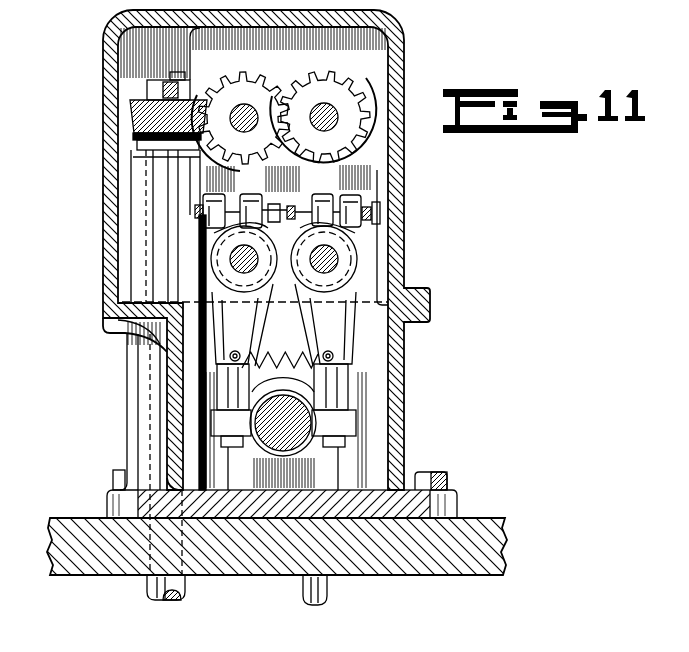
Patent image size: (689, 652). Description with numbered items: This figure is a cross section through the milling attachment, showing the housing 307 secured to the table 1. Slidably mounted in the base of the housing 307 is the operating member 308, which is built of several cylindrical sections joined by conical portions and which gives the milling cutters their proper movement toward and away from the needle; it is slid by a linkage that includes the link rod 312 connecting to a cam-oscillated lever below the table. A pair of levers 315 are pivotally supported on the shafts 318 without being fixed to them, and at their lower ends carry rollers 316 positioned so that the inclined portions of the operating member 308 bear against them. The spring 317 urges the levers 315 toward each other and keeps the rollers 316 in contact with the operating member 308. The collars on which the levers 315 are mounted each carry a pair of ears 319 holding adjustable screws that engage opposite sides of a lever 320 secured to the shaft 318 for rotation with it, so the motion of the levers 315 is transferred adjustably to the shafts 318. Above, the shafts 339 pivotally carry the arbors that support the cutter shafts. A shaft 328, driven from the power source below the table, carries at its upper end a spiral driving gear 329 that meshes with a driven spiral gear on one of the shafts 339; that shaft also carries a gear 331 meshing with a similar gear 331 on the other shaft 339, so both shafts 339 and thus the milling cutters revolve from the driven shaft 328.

The table 1 is at (448, 577).
The housing 307 is at (108, 244).
The operating member 308 is at (268, 436).
The link rod 312 is at (330, 594).
The levers 315 is at (228, 330).
The rollers 316 is at (214, 427).
The spring 317 is at (284, 353).
The shafts 318 is at (232, 259).
The ears 319 is at (212, 194).
The lever 320 is at (205, 221).
The shaft 328 is at (187, 590).
The spiral driving gear 329 is at (130, 114).
The gear 331 is at (326, 83).
The shafts 339 is at (327, 114).